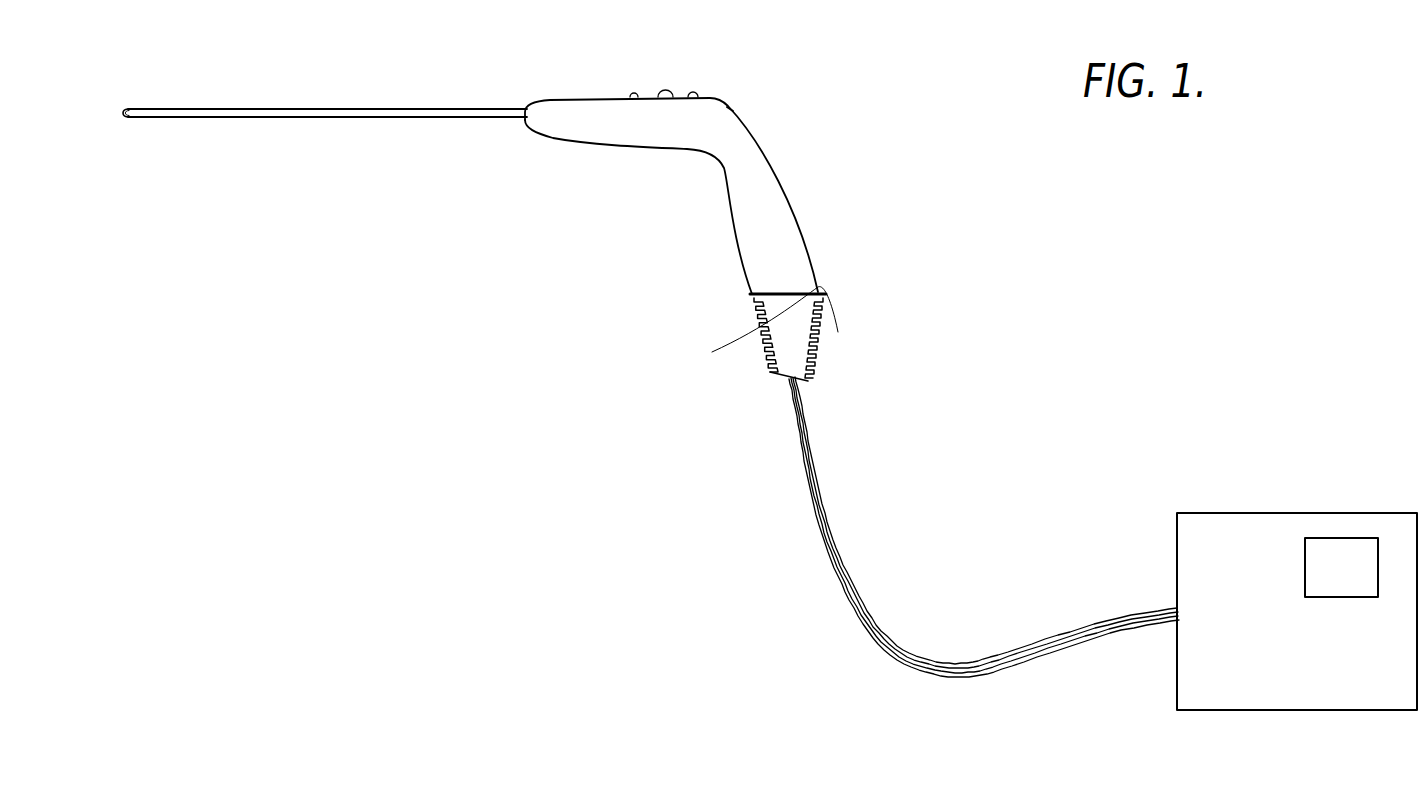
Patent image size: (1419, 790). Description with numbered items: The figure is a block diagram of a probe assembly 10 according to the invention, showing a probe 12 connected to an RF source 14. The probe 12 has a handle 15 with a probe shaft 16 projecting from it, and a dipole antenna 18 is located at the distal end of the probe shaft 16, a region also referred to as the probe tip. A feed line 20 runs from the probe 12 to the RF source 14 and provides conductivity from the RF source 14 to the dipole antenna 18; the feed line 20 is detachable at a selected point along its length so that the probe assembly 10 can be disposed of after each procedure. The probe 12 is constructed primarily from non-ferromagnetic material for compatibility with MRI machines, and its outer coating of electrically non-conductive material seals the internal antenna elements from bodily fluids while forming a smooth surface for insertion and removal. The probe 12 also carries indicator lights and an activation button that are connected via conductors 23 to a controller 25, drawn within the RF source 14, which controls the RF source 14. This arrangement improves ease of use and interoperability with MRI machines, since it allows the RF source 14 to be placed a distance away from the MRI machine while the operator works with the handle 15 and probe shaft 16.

The probe assembly 10 is at (1075, 252).
The probe 12 is at (477, 104).
The RF source 14 is at (1263, 506).
The handle 15 is at (808, 225).
The probe shaft 16 is at (316, 115).
The dipole antenna 18 is at (152, 108).
The feed line 20 is at (790, 398).
The conductors 23 is at (798, 389).
The controller 25 is at (1305, 568).